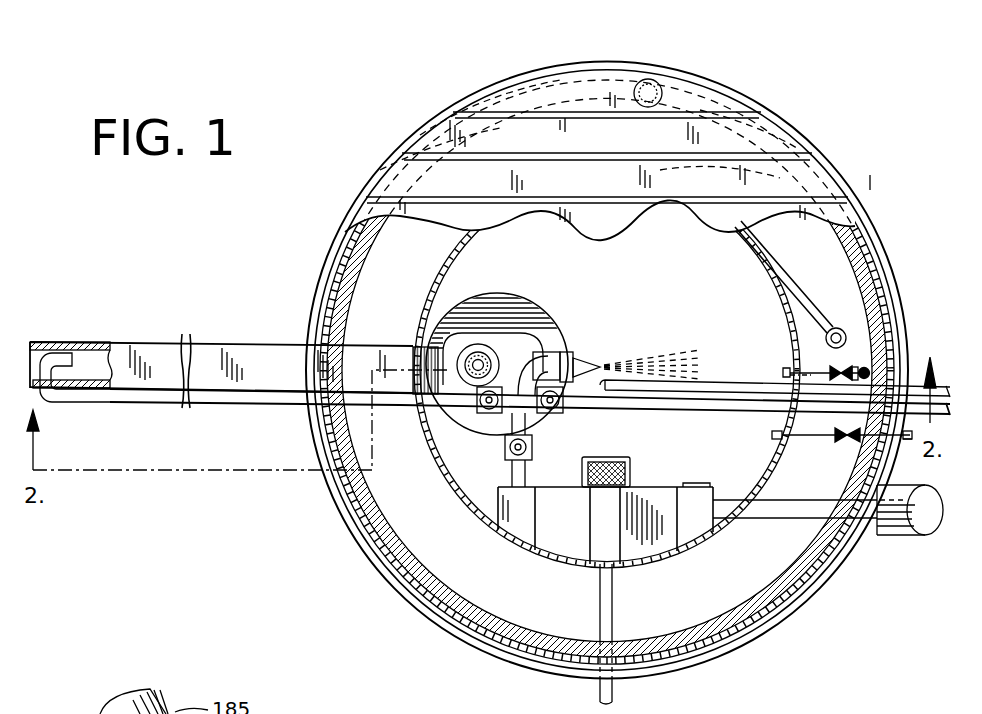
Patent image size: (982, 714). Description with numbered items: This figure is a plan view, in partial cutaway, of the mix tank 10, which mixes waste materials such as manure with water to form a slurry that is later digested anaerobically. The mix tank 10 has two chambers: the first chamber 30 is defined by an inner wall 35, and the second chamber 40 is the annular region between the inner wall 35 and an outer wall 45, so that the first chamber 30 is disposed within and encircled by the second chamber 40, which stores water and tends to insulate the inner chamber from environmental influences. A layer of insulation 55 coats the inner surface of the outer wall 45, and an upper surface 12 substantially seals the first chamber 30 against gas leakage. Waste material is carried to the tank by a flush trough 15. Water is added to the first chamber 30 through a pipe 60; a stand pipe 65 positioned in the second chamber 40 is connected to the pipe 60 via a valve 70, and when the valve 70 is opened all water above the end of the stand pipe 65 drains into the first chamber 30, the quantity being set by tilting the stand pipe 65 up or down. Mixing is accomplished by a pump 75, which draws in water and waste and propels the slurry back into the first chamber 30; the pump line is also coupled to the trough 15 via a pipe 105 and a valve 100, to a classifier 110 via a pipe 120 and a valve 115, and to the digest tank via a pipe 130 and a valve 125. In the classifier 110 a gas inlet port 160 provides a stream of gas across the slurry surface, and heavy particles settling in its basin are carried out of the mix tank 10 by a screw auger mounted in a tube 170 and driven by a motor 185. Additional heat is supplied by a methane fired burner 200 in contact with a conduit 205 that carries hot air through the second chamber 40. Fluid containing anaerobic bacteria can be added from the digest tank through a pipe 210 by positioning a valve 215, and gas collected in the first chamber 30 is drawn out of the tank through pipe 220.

The mix tank 10 is at (606, 348).
The upper surface 12 is at (504, 86).
The flush trough 15 is at (243, 346).
The first chamber 30 is at (644, 305).
The inner wall 35 is at (480, 524).
The second chamber 40 is at (556, 619).
The outer wall 45 is at (397, 578).
The layer of insulation 55 is at (367, 540).
The pipe 60 is at (787, 372).
The stand pipe 65 is at (868, 367).
The valve 70 is at (845, 364).
The pump 75 is at (685, 361).
The valve 100 is at (488, 413).
The pipe 105 is at (134, 403).
The classifier 110 is at (583, 530).
The valve 115 is at (534, 449).
The pipe 120 is at (526, 473).
The valve 125 is at (573, 408).
The pipe 130 is at (716, 411).
The gas inlet port 160 is at (614, 690).
The tube 170 is at (788, 520).
The motor 185 is at (912, 538).
The methane fired burner 200 is at (838, 327).
The conduit 205 is at (664, 93).
The pipe 210 is at (910, 441).
The valve 215 is at (845, 444).
The pipe 220 is at (695, 380).